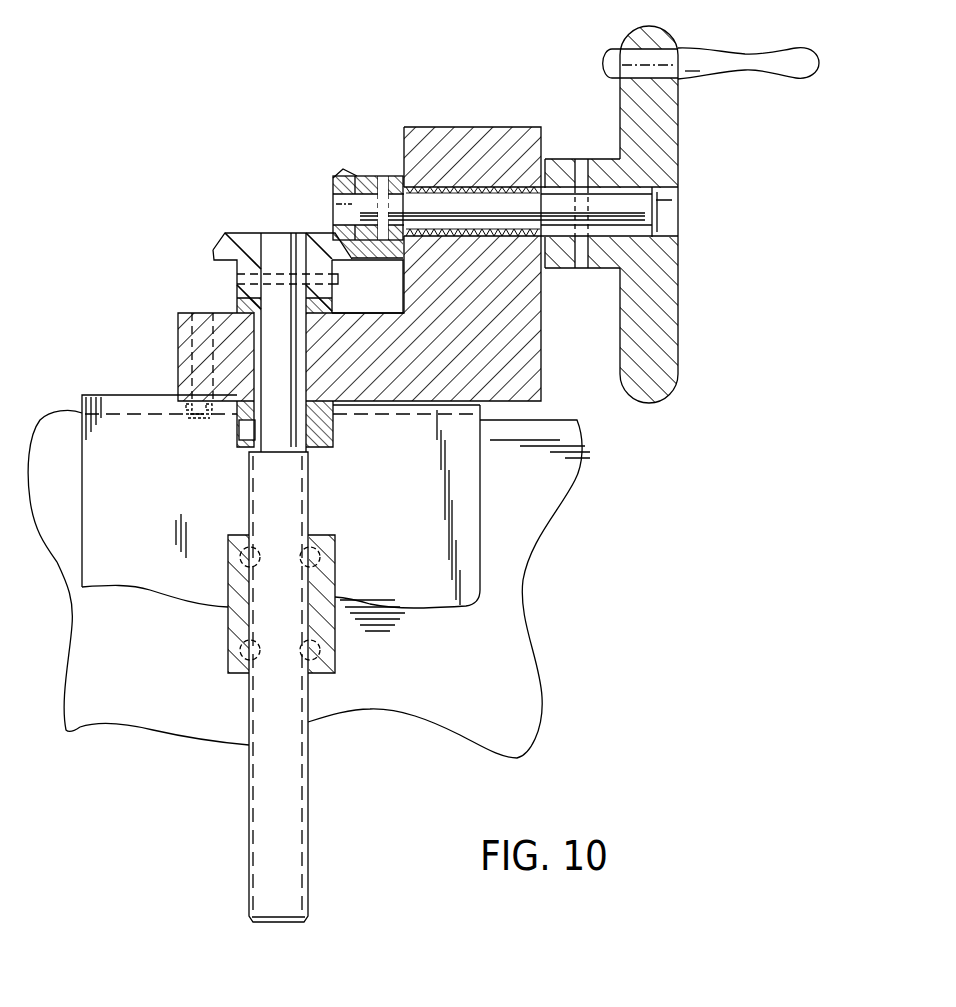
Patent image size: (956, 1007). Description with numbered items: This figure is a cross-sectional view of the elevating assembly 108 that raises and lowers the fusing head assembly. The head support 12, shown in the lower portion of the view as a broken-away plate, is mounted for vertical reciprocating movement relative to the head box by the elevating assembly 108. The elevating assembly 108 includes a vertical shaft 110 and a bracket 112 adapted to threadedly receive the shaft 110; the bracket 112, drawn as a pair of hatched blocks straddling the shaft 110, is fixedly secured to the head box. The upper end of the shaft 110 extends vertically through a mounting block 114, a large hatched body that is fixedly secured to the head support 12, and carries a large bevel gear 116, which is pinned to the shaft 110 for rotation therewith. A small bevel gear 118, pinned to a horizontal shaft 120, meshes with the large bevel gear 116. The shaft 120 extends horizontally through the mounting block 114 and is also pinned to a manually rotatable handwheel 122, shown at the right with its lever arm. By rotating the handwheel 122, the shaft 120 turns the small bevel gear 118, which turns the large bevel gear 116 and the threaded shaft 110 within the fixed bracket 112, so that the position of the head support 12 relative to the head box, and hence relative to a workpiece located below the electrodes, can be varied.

The head support 12 is at (117, 393).
The elevating assembly 108 is at (268, 79).
The shaft 110 is at (297, 792).
The bracket 112 is at (336, 586).
The mounting block 114 is at (538, 388).
The large bevel gear 116 is at (222, 244).
The small bevel gear 118 is at (349, 169).
The shaft 120 is at (371, 176).
The handwheel 122 is at (668, 160).